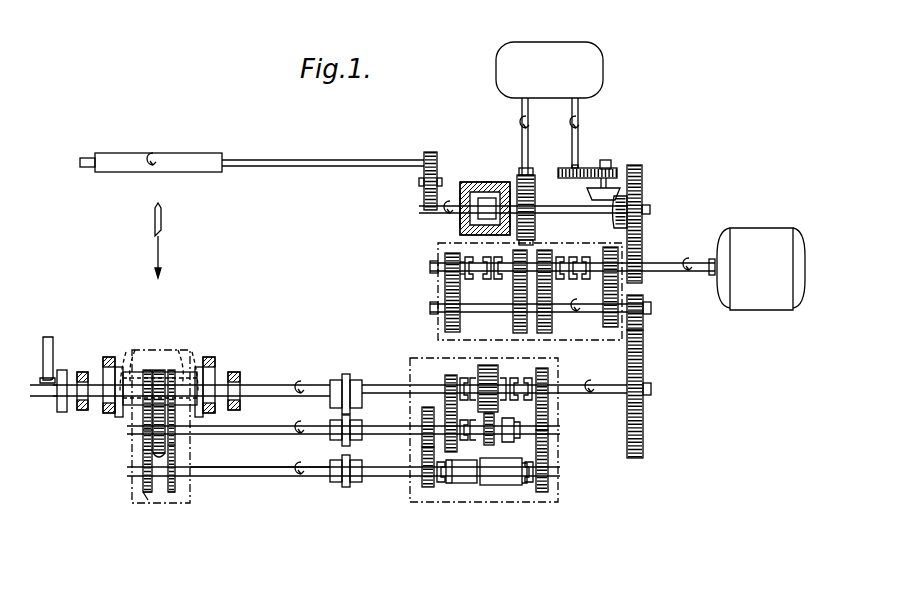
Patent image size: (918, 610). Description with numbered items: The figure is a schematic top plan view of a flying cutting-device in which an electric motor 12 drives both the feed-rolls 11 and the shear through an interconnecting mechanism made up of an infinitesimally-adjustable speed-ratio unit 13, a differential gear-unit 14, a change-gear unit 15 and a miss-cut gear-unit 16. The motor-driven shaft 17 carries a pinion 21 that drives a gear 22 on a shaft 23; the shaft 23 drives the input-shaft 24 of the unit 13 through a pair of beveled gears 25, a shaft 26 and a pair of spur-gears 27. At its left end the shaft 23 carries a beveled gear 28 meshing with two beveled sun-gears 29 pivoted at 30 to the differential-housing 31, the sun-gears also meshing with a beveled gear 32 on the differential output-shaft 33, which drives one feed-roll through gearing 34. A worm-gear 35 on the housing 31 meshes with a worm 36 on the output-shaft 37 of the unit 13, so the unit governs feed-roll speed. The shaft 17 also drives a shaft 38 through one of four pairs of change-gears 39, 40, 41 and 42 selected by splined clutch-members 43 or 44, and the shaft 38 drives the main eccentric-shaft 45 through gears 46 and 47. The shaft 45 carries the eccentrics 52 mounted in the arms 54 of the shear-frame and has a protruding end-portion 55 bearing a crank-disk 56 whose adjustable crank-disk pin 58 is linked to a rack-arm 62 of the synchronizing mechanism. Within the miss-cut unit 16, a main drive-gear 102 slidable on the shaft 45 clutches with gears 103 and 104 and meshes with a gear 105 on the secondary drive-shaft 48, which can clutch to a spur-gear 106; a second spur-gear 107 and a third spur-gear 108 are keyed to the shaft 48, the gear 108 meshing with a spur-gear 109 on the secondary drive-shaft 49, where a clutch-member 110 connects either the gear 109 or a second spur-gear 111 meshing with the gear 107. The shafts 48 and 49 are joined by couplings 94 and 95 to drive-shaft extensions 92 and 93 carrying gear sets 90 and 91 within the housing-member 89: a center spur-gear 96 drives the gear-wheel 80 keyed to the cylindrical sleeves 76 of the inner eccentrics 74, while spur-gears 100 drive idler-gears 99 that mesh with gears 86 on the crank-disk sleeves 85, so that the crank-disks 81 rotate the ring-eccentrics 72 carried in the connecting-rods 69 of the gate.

The feed-rolls 11 is at (182, 152).
The electric motor 12 is at (762, 310).
The infinitesimally-adjustable speed-ratio unit 13 is at (556, 40).
The differential gear-unit 14 is at (466, 183).
The change-gear unit 15 is at (438, 250).
The miss-cut gear-unit 16 is at (490, 503).
The shaft 17 is at (690, 275).
The pinion 21 is at (652, 272).
The gear 22 is at (638, 170).
The shaft 23 is at (570, 179).
The input-shaft 24 is at (579, 126).
The pair of beveled gears 25 is at (616, 206).
The shaft 26 is at (609, 161).
The pair of spur-gears 27 is at (580, 167).
The beveled gear 28 is at (510, 198).
The beveled sun-gears 29 is at (487, 208).
The pivot 30 is at (488, 183).
The differential-housing 31 is at (487, 181).
The beveled gear 32 is at (460, 200).
The differential output-shaft 33 is at (432, 214).
The gearing 34 is at (424, 184).
The worm-gear 35 is at (534, 186).
The worm 36 is at (535, 228).
The output-shaft 37 is at (521, 112).
The shaft 38 is at (570, 313).
The change-gear 39 is at (603, 296).
The change-gear 40 is at (552, 288).
The change-gear 41 is at (513, 290).
The change-gear 42 is at (445, 290).
The splined clutch-member 43 is at (575, 256).
The splined clutch-member 44 is at (486, 280).
The main eccentric-shaft 45 is at (284, 383).
The gear 46 is at (643, 300).
The gear 47 is at (638, 460).
The secondary eccentric drive-shaft 48 is at (376, 425).
The secondary eccentric drive-shaft 49 is at (378, 477).
The eccentrics 52 is at (82, 411).
The arms 54 is at (82, 371).
The end-portion 55 is at (63, 370).
The crank-disk 56 is at (60, 412).
The crank-disk pin 58 is at (46, 383).
The rack-arm 62 is at (43, 337).
The connecting-rods 69 is at (118, 366).
The ring-eccentrics 72 is at (106, 357).
The inner eccentric 74 is at (187, 364).
The cylindrical sleeve 76 is at (170, 370).
The gear-wheel 80 is at (158, 370).
The crank-disks 81 is at (142, 429).
The crank-disk sleeve 85 is at (138, 350).
The gear 86 is at (154, 422).
The housing-member 89 is at (160, 504).
The set of gears 90 is at (165, 451).
The set of gears 91 is at (147, 492).
The drive-shaft extension 92 is at (286, 435).
The drive-shaft extension 93 is at (283, 478).
The coupling 94 is at (354, 446).
The coupling 95 is at (346, 484).
The center spur-gear 96 is at (156, 454).
The idler-gear 99 is at (142, 450).
The spur-gears 100 is at (146, 490).
The main drive-gear 102 is at (488, 364).
The gear 103 is at (451, 374).
The gear 104 is at (542, 367).
The gear 105 is at (492, 445).
The spur-gear 106 is at (448, 484).
The second spur-gear 107 is at (428, 407).
The third spur-gear 108 is at (549, 414).
The spur-gear 109 is at (542, 493).
The clutch-member 110 is at (498, 486).
The second spur-gear 111 is at (430, 488).